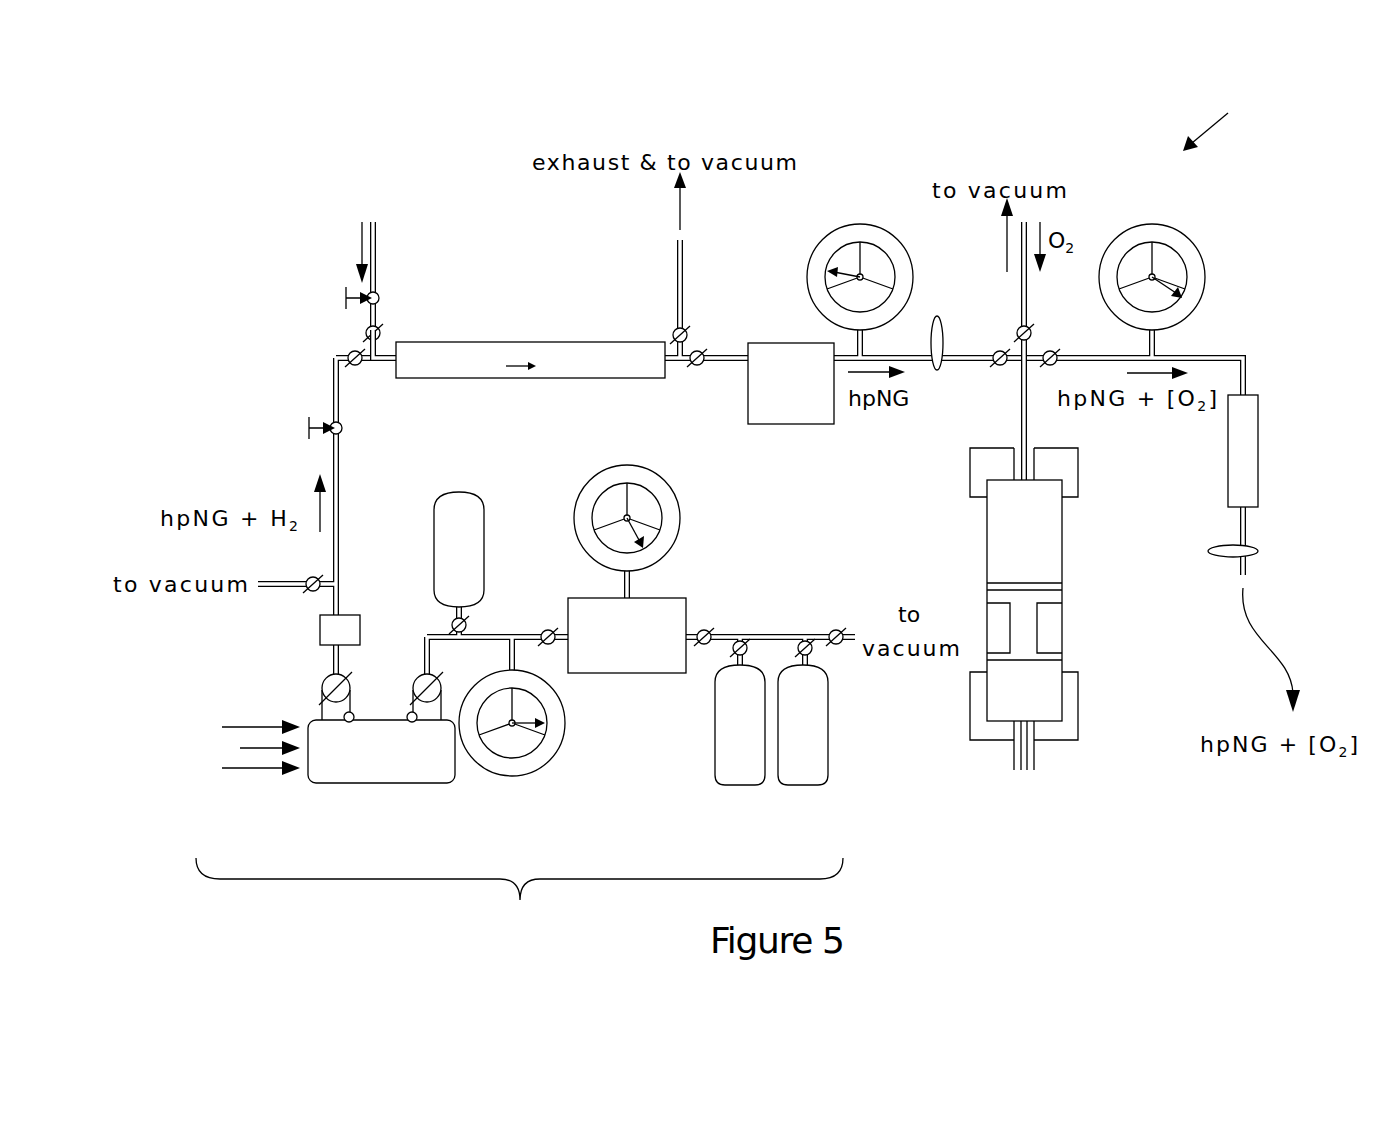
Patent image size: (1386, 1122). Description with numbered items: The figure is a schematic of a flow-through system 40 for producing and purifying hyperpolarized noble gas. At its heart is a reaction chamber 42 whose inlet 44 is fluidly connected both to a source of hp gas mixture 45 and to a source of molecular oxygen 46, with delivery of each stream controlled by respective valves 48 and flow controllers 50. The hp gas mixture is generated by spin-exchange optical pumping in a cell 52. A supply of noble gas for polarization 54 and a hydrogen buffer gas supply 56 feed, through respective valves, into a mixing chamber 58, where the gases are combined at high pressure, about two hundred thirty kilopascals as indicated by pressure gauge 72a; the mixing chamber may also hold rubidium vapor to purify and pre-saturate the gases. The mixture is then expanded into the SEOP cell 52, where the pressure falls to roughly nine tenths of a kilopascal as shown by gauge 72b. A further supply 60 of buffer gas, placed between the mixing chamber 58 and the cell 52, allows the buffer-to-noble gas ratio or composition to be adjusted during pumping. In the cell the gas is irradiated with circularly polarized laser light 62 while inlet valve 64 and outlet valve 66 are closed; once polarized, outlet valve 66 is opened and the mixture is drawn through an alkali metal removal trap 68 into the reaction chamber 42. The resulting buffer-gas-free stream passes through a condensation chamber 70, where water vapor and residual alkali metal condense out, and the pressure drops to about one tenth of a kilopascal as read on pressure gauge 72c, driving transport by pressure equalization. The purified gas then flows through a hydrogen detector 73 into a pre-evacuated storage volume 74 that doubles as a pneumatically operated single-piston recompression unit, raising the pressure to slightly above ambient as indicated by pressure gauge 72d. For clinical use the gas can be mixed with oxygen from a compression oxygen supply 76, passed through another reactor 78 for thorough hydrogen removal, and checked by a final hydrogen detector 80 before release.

The flow-through system 40 is at (1225, 120).
The reaction chamber 42 is at (530, 342).
The inlet 44 is at (392, 355).
The source of hp gas mixture 45 is at (519, 895).
The source of molecular oxygen 46 is at (328, 251).
The valve 48 is at (363, 334).
The flow controller 50 is at (345, 298).
The SEOP cell 52 is at (378, 785).
The supply of noble gas for polarization 54 is at (740, 743).
The buffer gas supply 56 is at (803, 743).
The mixing chamber 58 is at (686, 610).
The further supply of buffer gas 60 is at (484, 510).
The circularly polarized laser light 62 is at (238, 747).
The inlet valve 64 is at (437, 702).
The outlet valve 66 is at (322, 682).
The alkali metal removal trap 68 is at (352, 615).
The condensation chamber 70 is at (775, 343).
The pressure gauge 72a is at (680, 518).
The pressure gauge 72b is at (565, 725).
The pressure gauge 72c is at (888, 232).
The pressure gauge 72d is at (1200, 247).
The hydrogen detector 73 is at (937, 372).
The pre-evacuated storage volume 74 is at (1024, 625).
The compression oxygen supply 76 is at (1065, 330).
The reactor 78 is at (1258, 455).
The final hydrogen detector 80 is at (1258, 551).